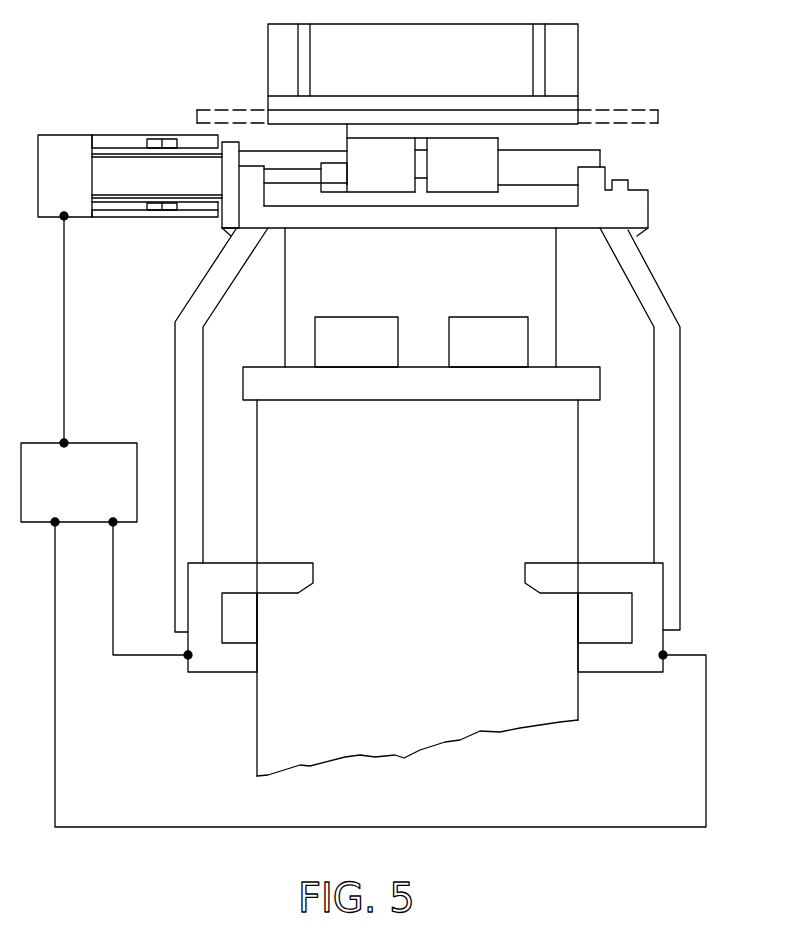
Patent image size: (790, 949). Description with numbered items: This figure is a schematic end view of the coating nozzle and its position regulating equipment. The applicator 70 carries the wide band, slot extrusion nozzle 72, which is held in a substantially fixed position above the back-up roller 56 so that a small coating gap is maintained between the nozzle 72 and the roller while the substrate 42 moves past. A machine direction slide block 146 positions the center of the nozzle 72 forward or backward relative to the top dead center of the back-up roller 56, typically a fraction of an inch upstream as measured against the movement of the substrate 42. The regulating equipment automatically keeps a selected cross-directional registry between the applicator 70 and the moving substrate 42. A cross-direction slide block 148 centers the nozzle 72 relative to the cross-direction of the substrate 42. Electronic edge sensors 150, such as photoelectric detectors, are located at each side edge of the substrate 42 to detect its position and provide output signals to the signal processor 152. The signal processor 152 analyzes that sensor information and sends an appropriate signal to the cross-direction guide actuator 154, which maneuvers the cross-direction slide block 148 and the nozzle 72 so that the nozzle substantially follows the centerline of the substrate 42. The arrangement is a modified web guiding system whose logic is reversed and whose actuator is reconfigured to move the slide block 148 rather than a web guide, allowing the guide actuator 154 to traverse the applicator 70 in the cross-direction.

The substrate 42 is at (550, 460).
The back-up roller 56 is at (258, 468).
The applicator 70 is at (635, 207).
The slot extrusion nozzle 72 is at (594, 382).
The machine direction slide block 146 is at (540, 282).
The cross-direction slide block 148 is at (600, 158).
The edge sensors 150 is at (223, 663).
The signal processor 152 is at (107, 448).
The cross-direction guide actuator 154 is at (80, 203).